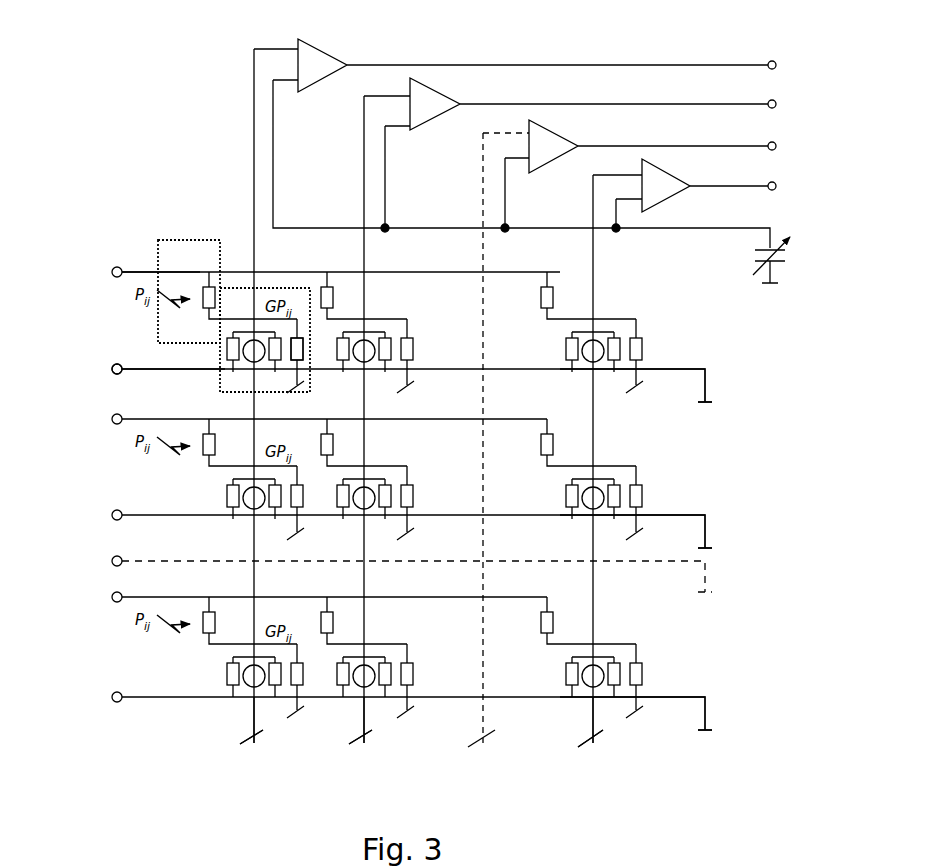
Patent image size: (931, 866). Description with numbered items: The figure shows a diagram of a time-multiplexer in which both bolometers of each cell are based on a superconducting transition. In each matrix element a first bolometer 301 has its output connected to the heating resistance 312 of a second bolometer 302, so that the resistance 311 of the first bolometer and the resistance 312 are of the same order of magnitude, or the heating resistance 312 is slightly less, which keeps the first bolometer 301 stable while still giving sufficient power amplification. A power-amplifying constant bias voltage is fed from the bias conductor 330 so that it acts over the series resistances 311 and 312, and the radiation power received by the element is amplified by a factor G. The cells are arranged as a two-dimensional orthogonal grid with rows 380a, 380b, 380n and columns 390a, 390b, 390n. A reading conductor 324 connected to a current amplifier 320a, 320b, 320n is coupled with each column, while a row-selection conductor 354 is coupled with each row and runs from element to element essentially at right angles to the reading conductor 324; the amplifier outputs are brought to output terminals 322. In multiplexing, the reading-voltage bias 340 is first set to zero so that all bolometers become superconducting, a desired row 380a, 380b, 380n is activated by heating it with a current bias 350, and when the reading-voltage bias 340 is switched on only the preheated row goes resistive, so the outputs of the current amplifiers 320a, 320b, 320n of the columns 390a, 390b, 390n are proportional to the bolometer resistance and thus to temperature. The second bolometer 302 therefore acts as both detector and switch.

The first bolometer 301 is at (176, 259).
The second bolometer 302 is at (230, 381).
The resistance of the first bolometer 311 is at (212, 295).
The heating resistance of the second bolometer 312 is at (302, 346).
The current amplifier 320a is at (313, 62).
The current amplifier 320b is at (427, 100).
The current amplifier 320n is at (668, 182).
The output terminal 322 is at (768, 63).
The reading conductor 324 is at (254, 107).
The bias conductor 330 is at (111, 270).
The reading-voltage bias 340 is at (783, 268).
The current bias 350 is at (112, 367).
The row-selection conductor 354 is at (153, 368).
The row 380a is at (740, 363).
The row 380b is at (738, 508).
The row 380n is at (738, 668).
The column 390a is at (247, 760).
The column 390b is at (374, 760).
The column 390n is at (601, 764).